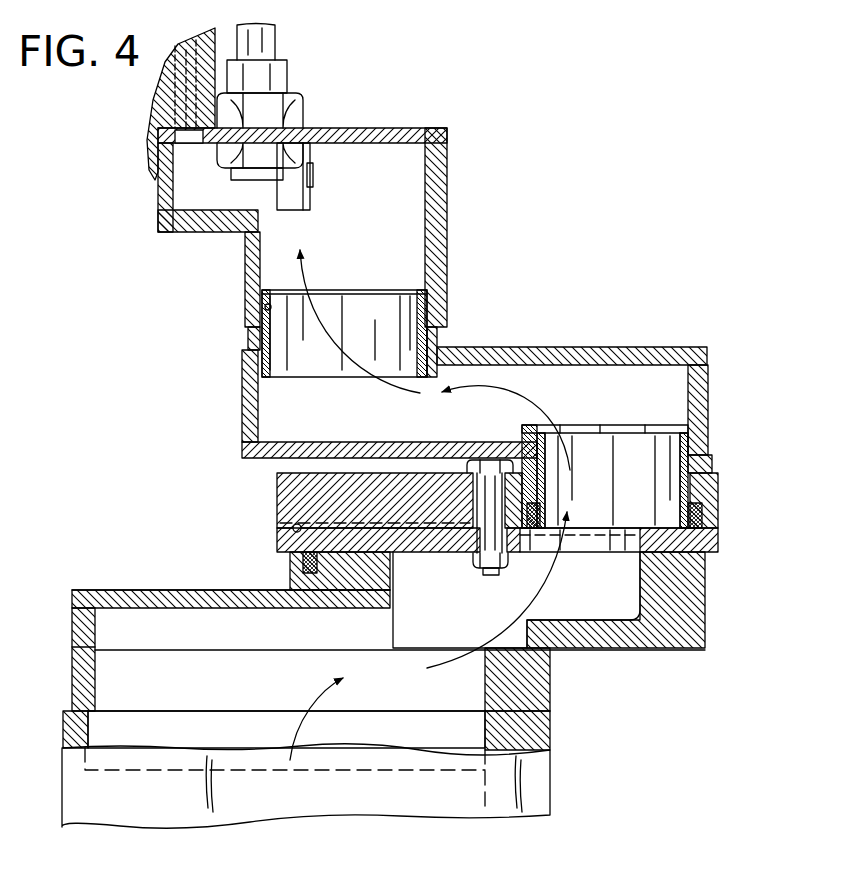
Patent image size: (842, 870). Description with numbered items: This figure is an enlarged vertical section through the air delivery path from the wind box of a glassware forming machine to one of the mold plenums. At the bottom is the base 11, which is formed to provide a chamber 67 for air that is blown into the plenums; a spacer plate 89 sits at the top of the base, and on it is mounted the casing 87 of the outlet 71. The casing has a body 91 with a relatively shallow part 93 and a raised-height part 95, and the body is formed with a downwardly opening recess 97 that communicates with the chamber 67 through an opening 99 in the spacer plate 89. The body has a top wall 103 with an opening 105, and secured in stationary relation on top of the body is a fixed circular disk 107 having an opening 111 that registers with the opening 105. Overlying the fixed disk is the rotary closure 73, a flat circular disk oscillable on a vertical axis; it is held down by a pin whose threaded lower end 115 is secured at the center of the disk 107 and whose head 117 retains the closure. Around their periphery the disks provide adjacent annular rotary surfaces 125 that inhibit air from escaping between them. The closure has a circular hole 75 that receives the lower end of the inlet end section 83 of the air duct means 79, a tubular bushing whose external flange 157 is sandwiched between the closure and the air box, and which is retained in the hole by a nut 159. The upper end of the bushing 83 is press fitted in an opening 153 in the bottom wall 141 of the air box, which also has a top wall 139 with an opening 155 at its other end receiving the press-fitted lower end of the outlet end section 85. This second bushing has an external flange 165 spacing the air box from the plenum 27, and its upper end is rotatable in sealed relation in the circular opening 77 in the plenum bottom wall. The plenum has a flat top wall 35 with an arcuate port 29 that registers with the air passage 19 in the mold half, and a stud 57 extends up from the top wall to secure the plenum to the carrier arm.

The base 11 is at (550, 777).
The air passage 19 is at (192, 26).
The plenum 27 is at (455, 128).
The port 29 is at (158, 177).
The top wall 35 is at (365, 128).
The stud 57 is at (283, 52).
The chamber 67 is at (243, 744).
The outlet 71 is at (283, 783).
The closure 73 is at (277, 484).
The circular hole 75 is at (685, 492).
The circular opening 77 is at (265, 307).
The air duct means 79 is at (713, 347).
The inlet end section 83 is at (640, 433).
The outlet end section 85 is at (322, 378).
The casing 87 is at (67, 588).
The spacer plate 89 is at (550, 697).
The body 91 is at (72, 628).
The relatively shallow part 93 is at (118, 590).
The raised-height part 95 is at (706, 612).
The recess 97 is at (270, 643).
The opening 99 is at (97, 683).
The top wall 103 is at (388, 608).
The opening 105 is at (410, 558).
The disk 107 is at (273, 556).
The opening 111 is at (598, 548).
The threaded lower end 115 is at (495, 575).
The head 117 is at (492, 460).
The annular rotary surfaces 125 is at (274, 537).
The top wall 139 is at (523, 357).
The bottom wall 141 is at (262, 462).
The opening 153 is at (692, 445).
The opening 155 is at (257, 360).
The external flange 157 is at (714, 468).
The nut 159 is at (702, 512).
The external flange 165 is at (248, 336).